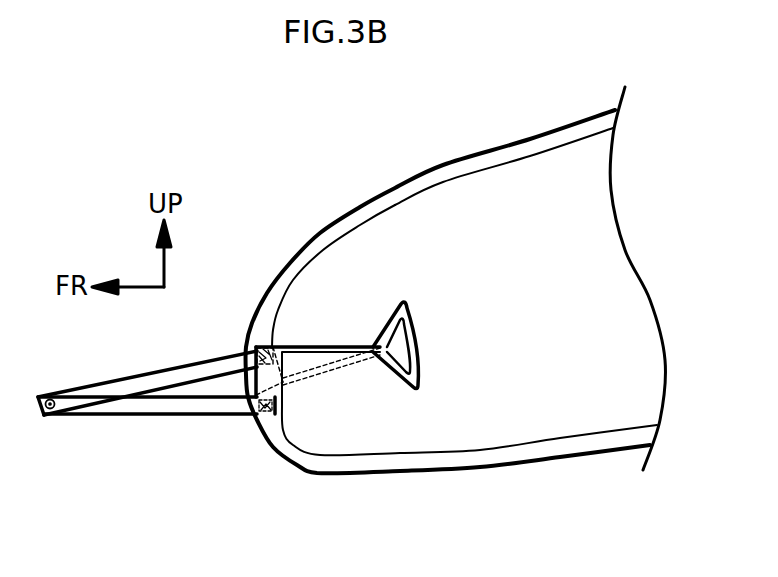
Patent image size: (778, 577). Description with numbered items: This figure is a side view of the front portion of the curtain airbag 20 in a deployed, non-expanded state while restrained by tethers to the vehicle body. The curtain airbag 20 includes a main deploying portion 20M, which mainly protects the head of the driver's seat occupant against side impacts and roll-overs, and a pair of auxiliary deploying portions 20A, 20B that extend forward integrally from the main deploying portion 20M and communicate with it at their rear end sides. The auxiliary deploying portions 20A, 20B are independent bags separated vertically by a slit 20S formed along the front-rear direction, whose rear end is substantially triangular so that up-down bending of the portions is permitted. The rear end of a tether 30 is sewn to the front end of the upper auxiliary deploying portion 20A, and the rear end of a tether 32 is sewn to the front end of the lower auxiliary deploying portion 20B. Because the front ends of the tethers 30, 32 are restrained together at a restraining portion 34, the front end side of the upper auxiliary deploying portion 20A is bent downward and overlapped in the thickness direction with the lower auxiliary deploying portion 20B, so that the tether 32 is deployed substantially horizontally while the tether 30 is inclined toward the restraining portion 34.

The curtain airbag 20 is at (543, 123).
The main deploying portion 20M is at (468, 198).
The auxiliary deploying portion 20A is at (307, 310).
The auxiliary deploying portion 20B is at (343, 433).
The slit 20S is at (403, 335).
The tether 30 is at (180, 372).
The tether 32 is at (168, 408).
The restraining portion 34 is at (45, 392).